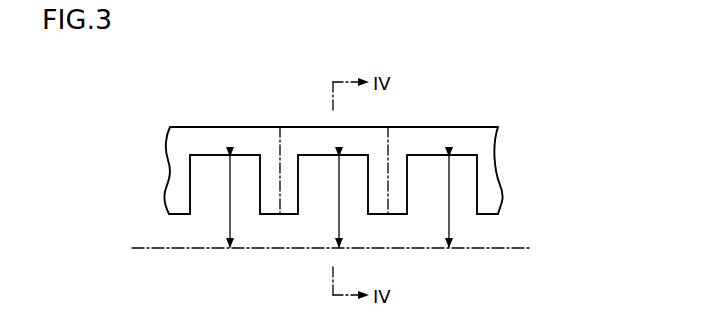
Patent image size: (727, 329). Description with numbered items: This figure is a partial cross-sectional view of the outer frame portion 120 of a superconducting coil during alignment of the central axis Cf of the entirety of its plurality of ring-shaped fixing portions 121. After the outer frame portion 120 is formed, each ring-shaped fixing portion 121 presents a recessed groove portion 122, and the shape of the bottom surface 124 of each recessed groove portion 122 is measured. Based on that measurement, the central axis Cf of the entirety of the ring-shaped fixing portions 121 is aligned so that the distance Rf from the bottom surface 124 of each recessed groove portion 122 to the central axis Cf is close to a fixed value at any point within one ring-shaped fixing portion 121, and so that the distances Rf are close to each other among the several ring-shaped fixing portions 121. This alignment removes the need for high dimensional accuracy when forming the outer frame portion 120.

The outer frame portion 120 is at (495, 125).
The ring-shaped fixing portion 121 is at (237, 143).
The recessed groove portion 122 is at (220, 202).
The bottom surface 124 is at (205, 156).
The distance Rf is at (232, 217).
The central axis Cf is at (517, 248).